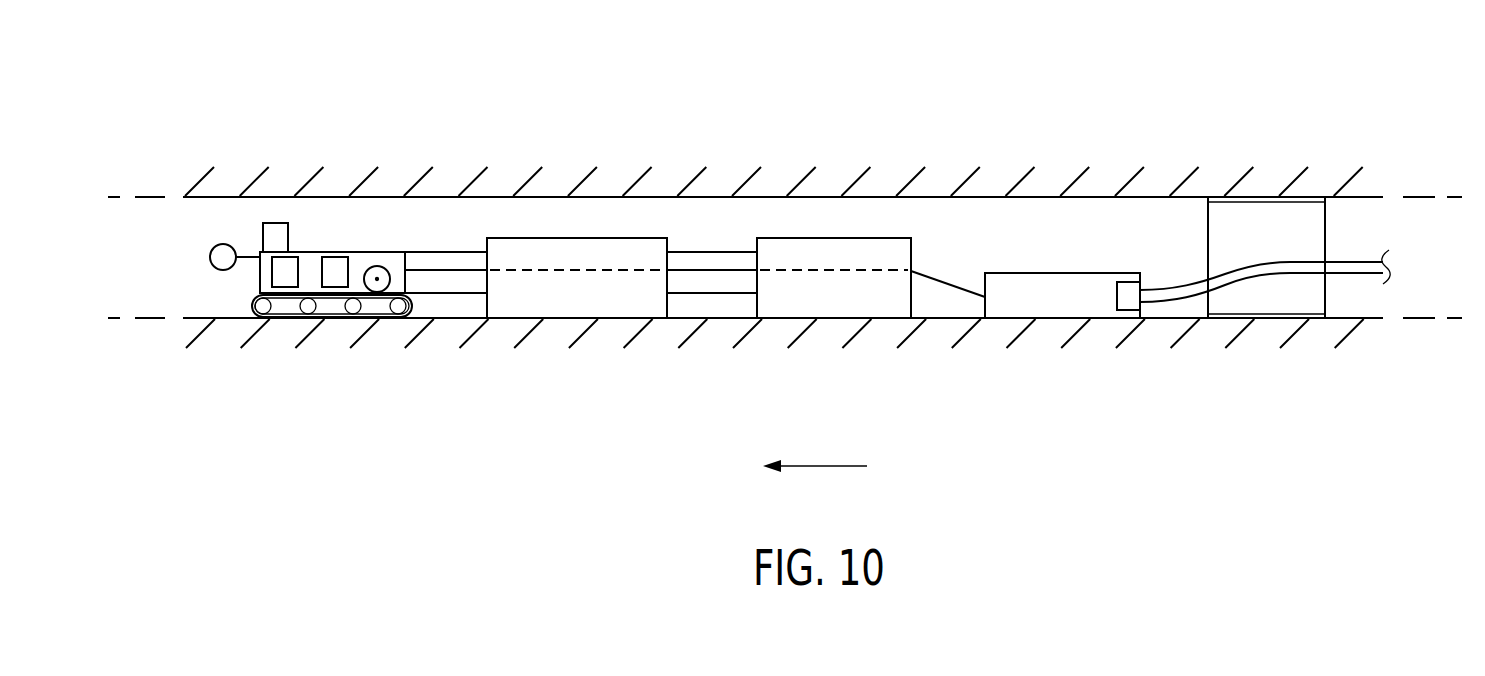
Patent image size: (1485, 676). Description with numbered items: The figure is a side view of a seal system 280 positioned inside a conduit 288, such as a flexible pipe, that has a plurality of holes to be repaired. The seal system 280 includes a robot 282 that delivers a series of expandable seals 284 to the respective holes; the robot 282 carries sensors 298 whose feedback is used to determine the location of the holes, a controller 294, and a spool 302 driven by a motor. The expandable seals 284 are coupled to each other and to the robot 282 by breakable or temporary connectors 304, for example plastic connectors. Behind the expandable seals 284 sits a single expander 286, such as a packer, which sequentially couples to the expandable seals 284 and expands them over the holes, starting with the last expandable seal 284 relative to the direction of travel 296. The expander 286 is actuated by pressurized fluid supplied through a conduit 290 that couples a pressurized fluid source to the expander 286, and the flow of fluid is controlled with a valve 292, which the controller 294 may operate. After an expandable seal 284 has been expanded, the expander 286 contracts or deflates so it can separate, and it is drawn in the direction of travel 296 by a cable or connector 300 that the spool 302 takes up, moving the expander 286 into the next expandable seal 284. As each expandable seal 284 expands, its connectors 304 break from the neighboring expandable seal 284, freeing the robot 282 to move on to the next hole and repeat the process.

The seal system 280 is at (1096, 62).
The robot 282 is at (257, 375).
The expandable seal 284 is at (628, 298).
The expander 286 is at (1065, 298).
The conduit 288 is at (277, 191).
The conduit 290 is at (1350, 262).
The valve 292 is at (1127, 281).
The controller 294 is at (335, 287).
The direction of travel 296 is at (820, 466).
The sensor 298 is at (272, 275).
The cable or connector 300 is at (951, 284).
The spool 302 is at (379, 266).
The connector 304 is at (442, 252).